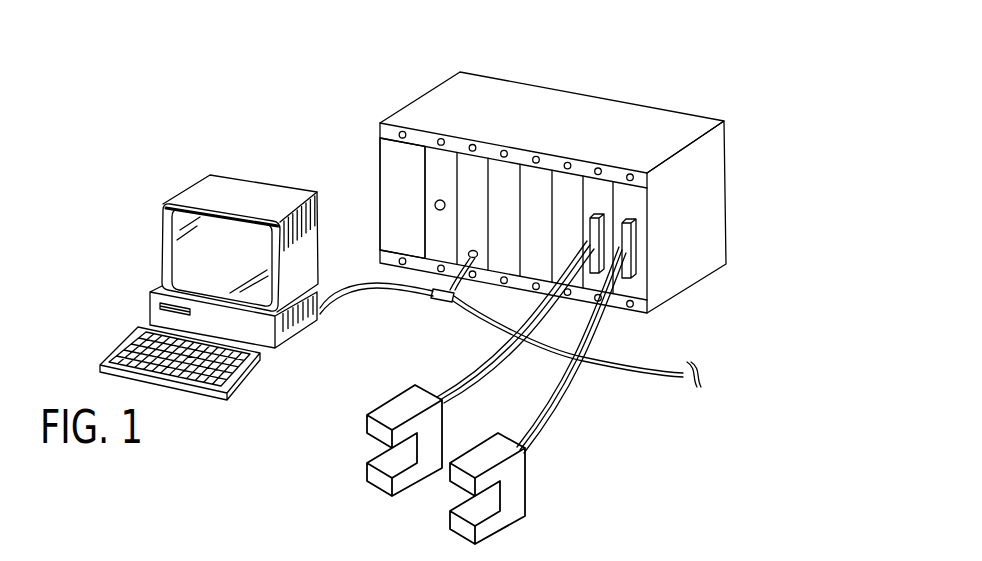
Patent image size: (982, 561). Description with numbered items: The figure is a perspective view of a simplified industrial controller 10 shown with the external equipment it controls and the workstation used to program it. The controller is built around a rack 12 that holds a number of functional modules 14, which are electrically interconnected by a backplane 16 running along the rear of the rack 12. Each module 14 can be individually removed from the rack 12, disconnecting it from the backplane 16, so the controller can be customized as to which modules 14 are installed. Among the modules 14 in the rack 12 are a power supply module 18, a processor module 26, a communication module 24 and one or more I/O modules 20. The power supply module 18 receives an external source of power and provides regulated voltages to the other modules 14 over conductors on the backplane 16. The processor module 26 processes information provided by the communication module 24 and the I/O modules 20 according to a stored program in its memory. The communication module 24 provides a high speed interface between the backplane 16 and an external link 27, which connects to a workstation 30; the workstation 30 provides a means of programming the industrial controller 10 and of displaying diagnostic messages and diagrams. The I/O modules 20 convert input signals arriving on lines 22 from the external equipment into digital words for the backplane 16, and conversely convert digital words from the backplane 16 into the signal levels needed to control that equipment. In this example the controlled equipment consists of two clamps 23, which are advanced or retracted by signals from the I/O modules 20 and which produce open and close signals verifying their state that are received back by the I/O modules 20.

The industrial controller 10 is at (765, 137).
The rack 12 is at (675, 240).
The functional modules 14 is at (480, 162).
The backplane 16 is at (570, 82).
The power supply module 18 is at (413, 200).
The I/O modules 20 is at (599, 188).
The lines 22 is at (508, 364).
The clamps 23 is at (367, 465).
The communication module 24 is at (478, 184).
The processor module 26 is at (443, 231).
The external link 27 is at (403, 297).
The workstation 30 is at (244, 193).